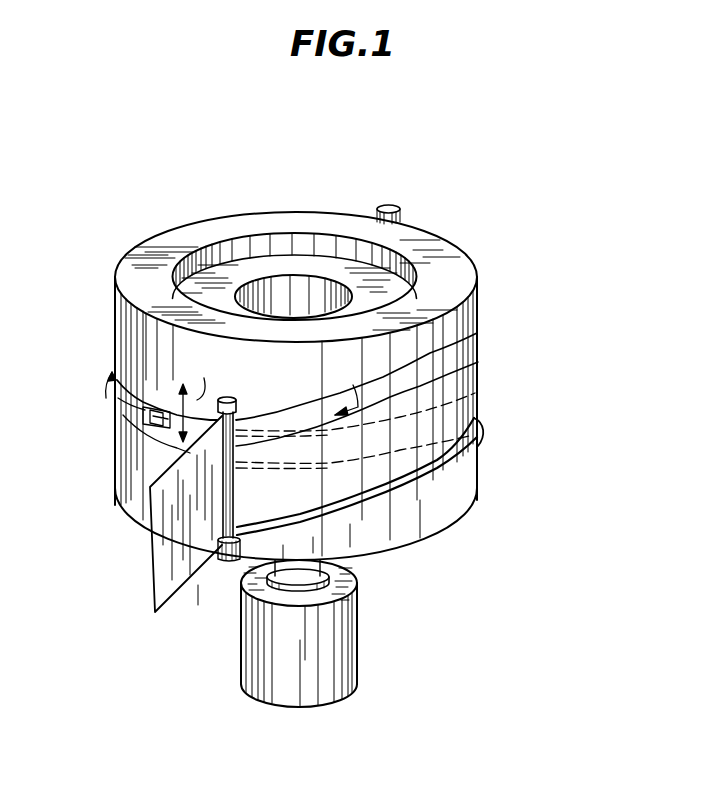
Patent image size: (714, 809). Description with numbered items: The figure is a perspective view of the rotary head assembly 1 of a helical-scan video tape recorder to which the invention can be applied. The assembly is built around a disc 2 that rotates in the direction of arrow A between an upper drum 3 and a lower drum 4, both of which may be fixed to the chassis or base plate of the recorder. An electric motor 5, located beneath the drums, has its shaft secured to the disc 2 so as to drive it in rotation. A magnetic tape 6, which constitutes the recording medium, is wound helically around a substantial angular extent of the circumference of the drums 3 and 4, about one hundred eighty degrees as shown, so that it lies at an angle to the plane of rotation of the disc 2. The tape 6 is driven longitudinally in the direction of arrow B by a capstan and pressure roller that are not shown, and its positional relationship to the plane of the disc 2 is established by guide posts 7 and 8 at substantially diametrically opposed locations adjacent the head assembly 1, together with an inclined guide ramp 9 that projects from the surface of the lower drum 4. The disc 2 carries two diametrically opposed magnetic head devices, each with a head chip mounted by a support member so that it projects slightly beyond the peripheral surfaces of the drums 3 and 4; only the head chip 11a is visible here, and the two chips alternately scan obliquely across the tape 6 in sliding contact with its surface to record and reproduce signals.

The rotary head assembly 1 is at (156, 221).
The disc 2 is at (140, 418).
The upper drum 3 is at (128, 347).
The lower drum 4 is at (128, 498).
The electric motor 5 is at (360, 633).
The magnetic tape 6 is at (168, 582).
The guide post 7 is at (234, 400).
The guide post 8 is at (400, 210).
The inclined guide ramp 9 is at (485, 437).
The head chip 11a is at (140, 427).